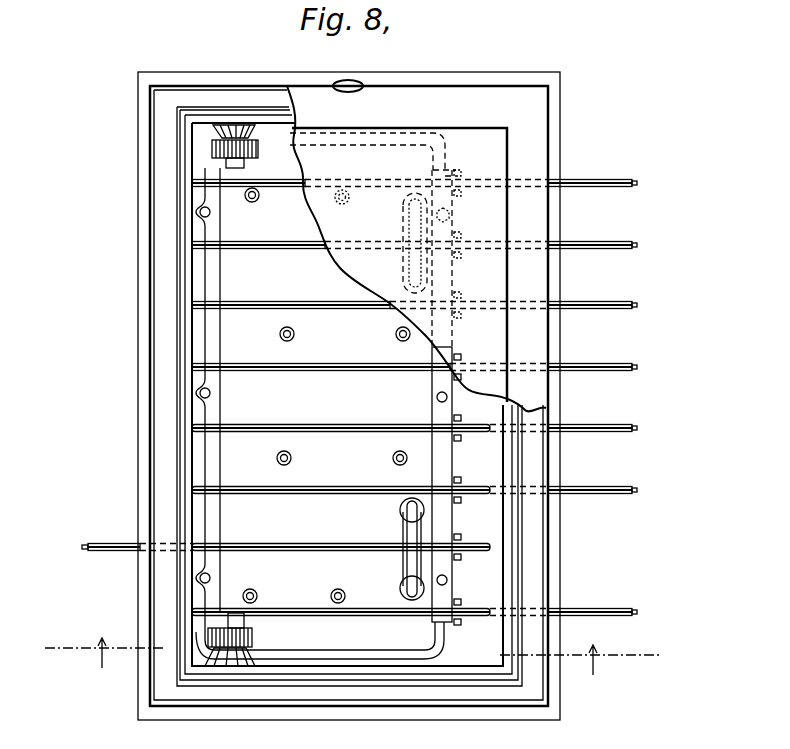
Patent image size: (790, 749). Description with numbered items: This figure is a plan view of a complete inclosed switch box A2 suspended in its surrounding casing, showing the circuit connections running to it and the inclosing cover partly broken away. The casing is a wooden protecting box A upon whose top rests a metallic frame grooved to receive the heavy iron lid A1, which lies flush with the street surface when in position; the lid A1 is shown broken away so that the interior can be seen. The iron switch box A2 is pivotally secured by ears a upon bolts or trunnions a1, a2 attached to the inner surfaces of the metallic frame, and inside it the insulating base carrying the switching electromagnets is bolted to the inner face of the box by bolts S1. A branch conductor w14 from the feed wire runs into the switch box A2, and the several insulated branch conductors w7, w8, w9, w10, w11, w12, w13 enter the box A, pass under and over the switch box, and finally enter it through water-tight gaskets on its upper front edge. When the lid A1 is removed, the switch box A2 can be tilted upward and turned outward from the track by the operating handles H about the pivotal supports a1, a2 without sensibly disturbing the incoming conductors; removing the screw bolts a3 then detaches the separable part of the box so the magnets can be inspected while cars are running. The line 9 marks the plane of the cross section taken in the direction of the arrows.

The wooden protecting box A is at (138, 325).
The iron lid A1 is at (538, 118).
The switch box A2 is at (328, 414).
The operating handle H is at (403, 222).
The ear a is at (258, 152).
The trunnion a1 is at (236, 612).
The trunnion a2 is at (238, 684).
The screw bolt a3 is at (209, 215).
The bolt S1 is at (254, 203).
The insulated branch conductor w7 is at (431, 489).
The insulated branch conductor w8 is at (431, 427).
The insulated branch conductor w9 is at (431, 366).
The insulated branch conductor w10 is at (435, 304).
The insulated branch conductor w11 is at (435, 244).
The insulated branch conductor w12 is at (435, 182).
The insulated branch conductor w13 is at (600, 603).
The branch conductor w14 is at (108, 534).
The section line 9 is at (352, 656).